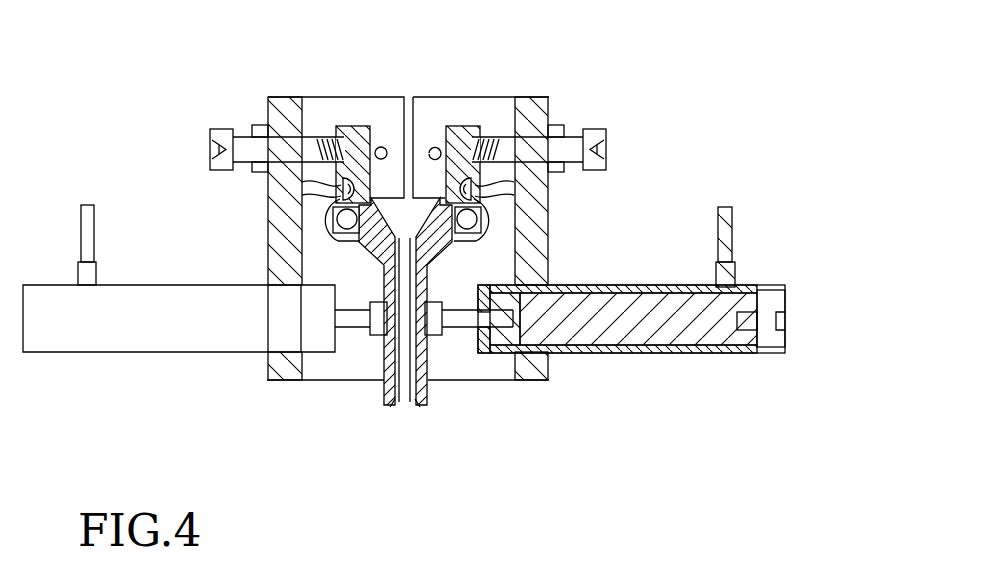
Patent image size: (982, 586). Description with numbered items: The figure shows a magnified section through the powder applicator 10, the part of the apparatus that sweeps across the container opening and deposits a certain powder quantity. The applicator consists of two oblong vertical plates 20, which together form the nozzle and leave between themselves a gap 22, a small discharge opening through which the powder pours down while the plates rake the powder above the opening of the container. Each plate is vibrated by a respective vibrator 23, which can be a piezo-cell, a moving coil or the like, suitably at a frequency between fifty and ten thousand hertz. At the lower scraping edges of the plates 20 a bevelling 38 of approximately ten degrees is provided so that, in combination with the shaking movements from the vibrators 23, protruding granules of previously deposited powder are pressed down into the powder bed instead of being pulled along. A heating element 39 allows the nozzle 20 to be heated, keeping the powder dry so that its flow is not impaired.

The powder applicator 10 is at (597, 73).
The gap nozzle/plates 20 is at (385, 390).
The gap 22 is at (405, 403).
The vibrator 23 is at (88, 327).
The bevelling 38 is at (386, 407).
The heating element 39 is at (345, 199).